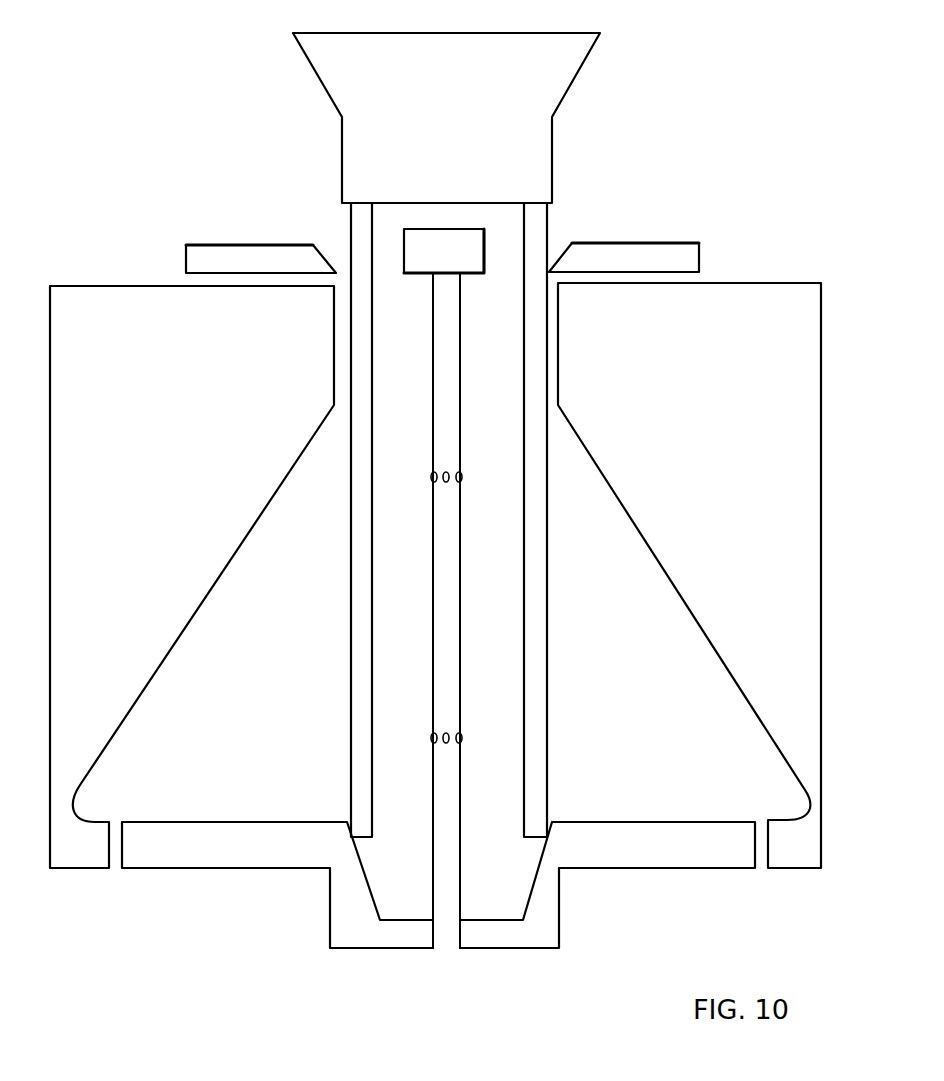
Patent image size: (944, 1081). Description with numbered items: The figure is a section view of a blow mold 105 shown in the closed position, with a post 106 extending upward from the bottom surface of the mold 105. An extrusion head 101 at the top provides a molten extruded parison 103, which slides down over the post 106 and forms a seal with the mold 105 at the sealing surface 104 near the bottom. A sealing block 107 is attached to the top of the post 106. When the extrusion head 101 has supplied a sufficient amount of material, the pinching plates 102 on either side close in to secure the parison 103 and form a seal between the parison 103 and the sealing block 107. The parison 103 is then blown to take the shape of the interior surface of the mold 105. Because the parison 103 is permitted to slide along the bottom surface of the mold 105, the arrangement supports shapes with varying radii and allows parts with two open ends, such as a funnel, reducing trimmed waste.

The extrusion head 101 is at (557, 60).
The pinching plates 102 is at (202, 258).
The extruded parison 103 is at (352, 735).
The sealing surface 104 is at (550, 833).
The mold 105 is at (725, 300).
The post 106 is at (447, 402).
The sealing block 107 is at (424, 248).